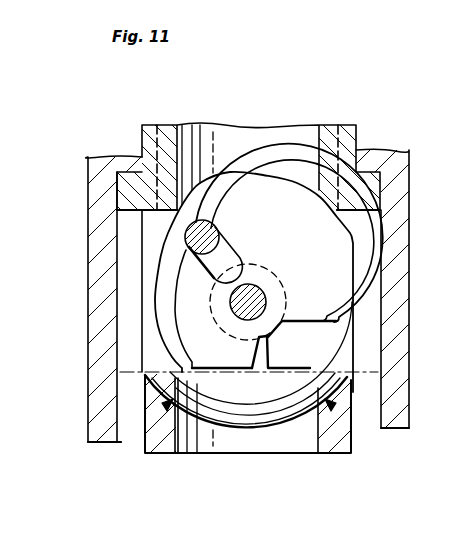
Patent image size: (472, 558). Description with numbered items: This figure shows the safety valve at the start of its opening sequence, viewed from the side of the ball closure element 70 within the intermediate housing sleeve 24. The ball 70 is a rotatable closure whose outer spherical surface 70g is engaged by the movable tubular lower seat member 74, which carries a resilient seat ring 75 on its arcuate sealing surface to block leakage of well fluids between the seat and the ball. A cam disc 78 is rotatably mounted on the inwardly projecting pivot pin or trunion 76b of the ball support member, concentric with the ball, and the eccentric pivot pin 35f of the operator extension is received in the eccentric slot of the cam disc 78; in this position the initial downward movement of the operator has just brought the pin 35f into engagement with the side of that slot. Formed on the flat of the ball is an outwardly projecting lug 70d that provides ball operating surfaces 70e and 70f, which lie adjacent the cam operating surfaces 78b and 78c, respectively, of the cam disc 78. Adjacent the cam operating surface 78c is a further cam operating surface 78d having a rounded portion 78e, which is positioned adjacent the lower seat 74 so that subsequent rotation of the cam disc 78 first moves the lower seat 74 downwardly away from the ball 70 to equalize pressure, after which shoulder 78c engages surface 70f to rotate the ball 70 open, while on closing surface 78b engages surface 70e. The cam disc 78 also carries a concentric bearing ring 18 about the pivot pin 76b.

The bearing ring 18 is at (292, 240).
The intermediate housing sleeve 24 is at (87, 283).
The pivot pin 35f is at (195, 220).
The ball closure element 70 is at (276, 174).
The lug 70d is at (273, 350).
The ball operating surface 70e is at (294, 316).
The ball operating surface 70f is at (258, 344).
The outer spherical surface 70g is at (291, 180).
The lower seat member 74 is at (341, 447).
The resilient seat ring 75 is at (330, 408).
The pivot pin 76b is at (270, 268).
The cam disc 78 is at (301, 262).
The cam operating surface 78b is at (288, 336).
The cam operating surface 78c is at (260, 368).
The cam operating surface 78d is at (246, 372).
The rounded portion 78e is at (187, 371).